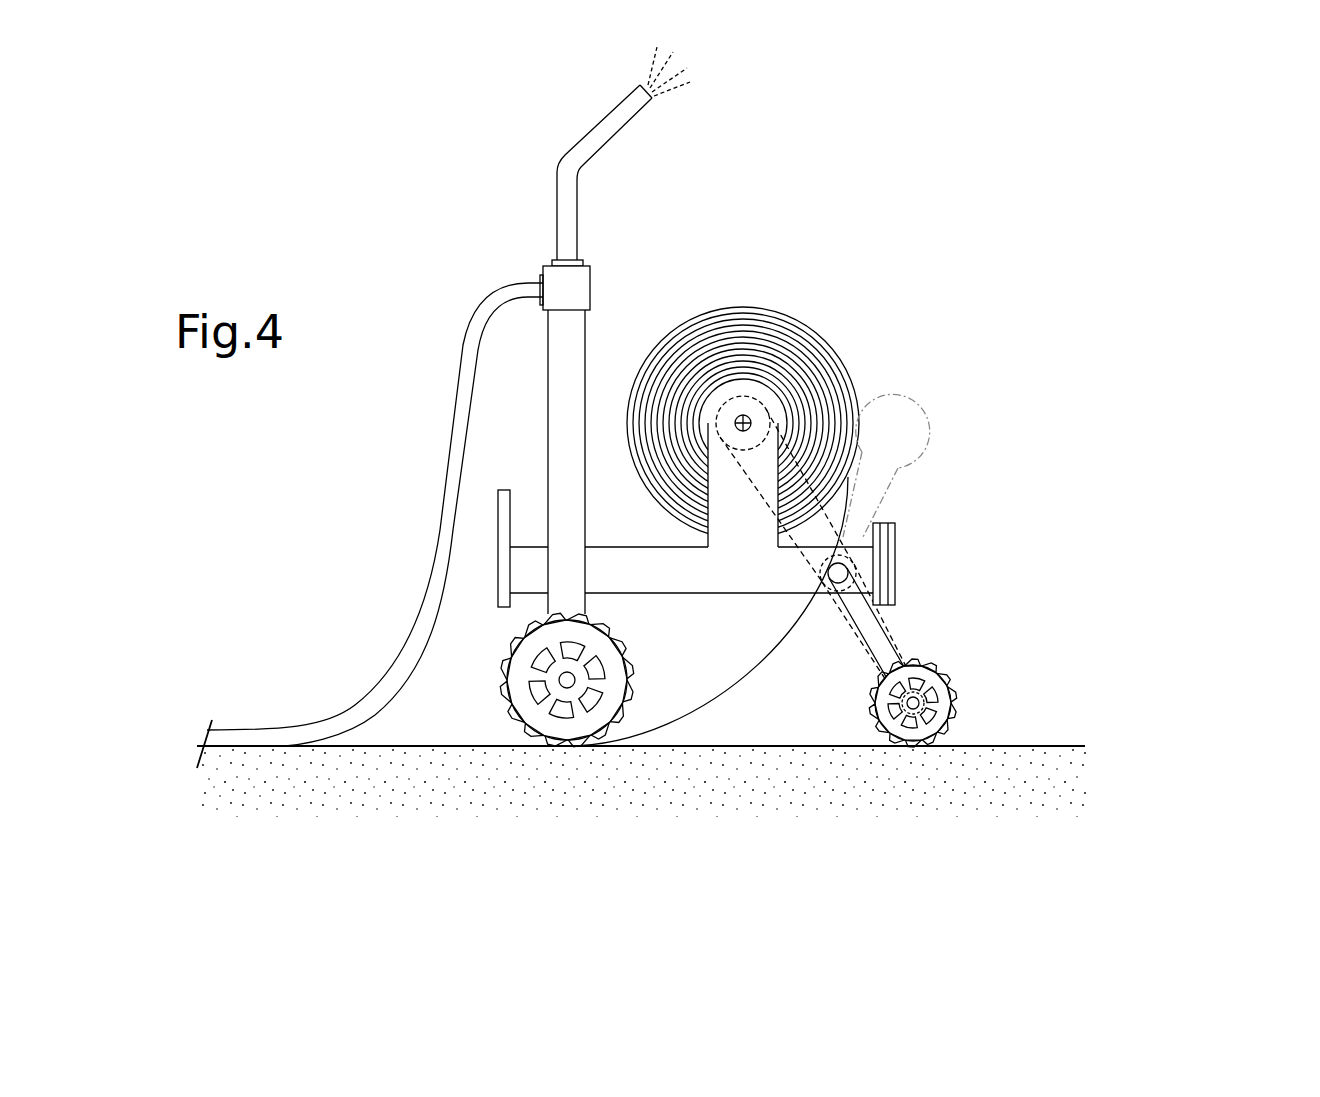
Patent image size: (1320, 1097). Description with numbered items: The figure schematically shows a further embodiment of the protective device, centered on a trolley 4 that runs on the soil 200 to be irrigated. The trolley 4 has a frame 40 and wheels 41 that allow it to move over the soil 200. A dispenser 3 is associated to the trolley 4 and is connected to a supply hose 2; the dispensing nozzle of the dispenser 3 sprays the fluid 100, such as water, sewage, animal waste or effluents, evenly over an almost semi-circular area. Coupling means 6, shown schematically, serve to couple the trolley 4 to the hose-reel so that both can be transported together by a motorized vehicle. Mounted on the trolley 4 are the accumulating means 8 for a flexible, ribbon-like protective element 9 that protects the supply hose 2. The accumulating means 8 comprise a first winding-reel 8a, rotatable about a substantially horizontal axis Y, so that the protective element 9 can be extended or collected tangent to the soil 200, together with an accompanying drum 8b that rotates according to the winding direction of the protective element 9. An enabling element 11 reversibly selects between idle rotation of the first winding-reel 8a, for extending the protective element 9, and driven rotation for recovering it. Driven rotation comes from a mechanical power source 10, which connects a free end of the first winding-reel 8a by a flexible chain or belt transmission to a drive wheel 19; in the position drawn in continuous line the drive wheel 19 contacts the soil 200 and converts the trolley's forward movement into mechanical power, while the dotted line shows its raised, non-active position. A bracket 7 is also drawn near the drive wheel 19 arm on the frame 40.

The fluid 100 is at (705, 68).
The dispenser 3 is at (557, 196).
The supply hose 2 is at (453, 397).
The trolley 4 is at (475, 625).
The coupling means 6 is at (497, 525).
The frame 40 is at (653, 575).
The accumulating means 8 is at (743, 356).
The first winding-reel 8a is at (710, 373).
The axis Y is at (736, 410).
The enabling element 11 is at (808, 437).
The power source 10 is at (910, 615).
The accompanying drum 8b is at (893, 517).
The rear bracket / stop 7 is at (897, 563).
The protective element 9 is at (787, 678).
The drive wheel 19 is at (913, 387).
The wheels 41 is at (558, 725).
The soil 200 is at (1070, 824).